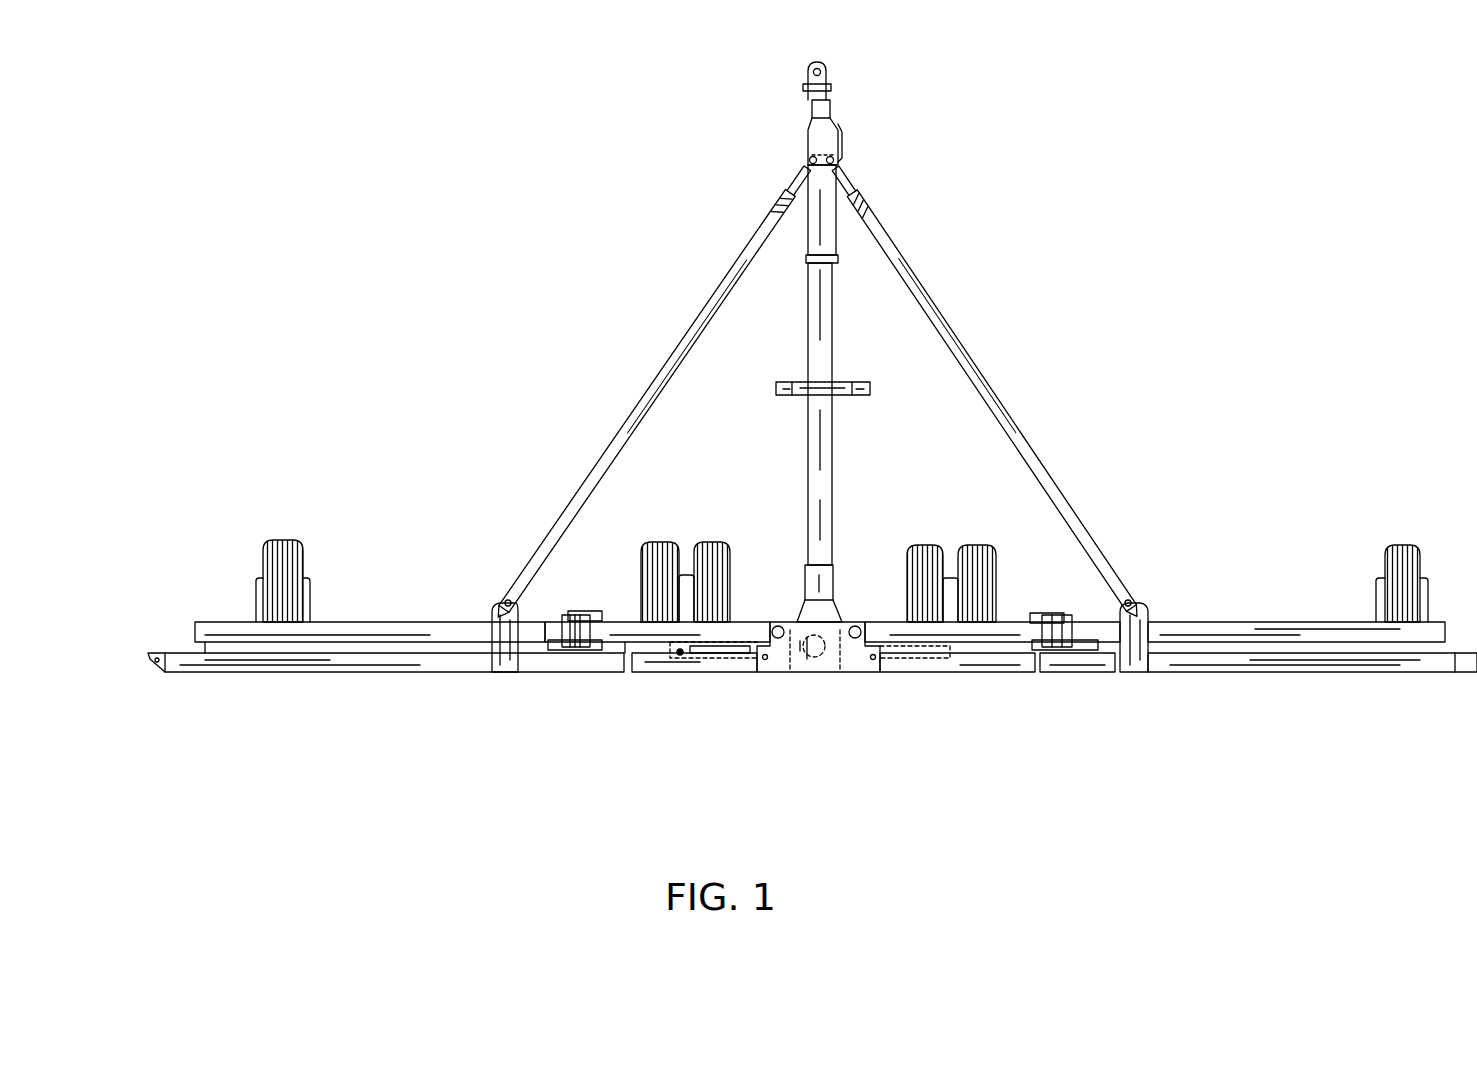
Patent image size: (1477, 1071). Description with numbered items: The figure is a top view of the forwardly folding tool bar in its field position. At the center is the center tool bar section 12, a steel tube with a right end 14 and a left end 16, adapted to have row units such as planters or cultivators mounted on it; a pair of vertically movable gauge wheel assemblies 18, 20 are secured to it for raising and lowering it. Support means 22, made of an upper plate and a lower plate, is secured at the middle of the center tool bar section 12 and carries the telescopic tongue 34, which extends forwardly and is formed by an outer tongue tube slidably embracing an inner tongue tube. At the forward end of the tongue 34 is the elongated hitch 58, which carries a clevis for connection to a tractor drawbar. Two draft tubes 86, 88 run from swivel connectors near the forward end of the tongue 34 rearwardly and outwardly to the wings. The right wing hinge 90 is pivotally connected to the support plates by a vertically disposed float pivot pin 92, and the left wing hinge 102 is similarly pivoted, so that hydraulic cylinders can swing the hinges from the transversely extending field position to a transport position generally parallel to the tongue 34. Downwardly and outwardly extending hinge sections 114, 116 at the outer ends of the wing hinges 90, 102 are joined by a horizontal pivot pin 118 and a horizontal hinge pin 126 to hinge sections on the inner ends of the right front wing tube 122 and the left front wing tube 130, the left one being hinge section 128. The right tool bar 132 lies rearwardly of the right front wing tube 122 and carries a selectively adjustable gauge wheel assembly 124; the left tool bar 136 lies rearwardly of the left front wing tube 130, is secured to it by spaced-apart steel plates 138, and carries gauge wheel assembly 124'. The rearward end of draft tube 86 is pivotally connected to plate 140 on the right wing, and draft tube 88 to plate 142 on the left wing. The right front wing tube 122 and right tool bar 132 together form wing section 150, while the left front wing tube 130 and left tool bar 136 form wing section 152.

The center tool bar section 12 is at (968, 680).
The right end 14 is at (1062, 650).
The left end 16 is at (640, 662).
The gauge wheel assembly 18 is at (920, 545).
The gauge wheel assembly 20 is at (715, 548).
The support means 22 is at (860, 675).
The telescopic tongue 34 is at (842, 340).
The hitch 58 is at (785, 106).
The draft tube 86 is at (965, 348).
The draft tube 88 is at (680, 340).
The right wing hinge 90 is at (1005, 603).
The float pivot pin 92 is at (852, 628).
The left wing hinge 102 is at (623, 603).
The hinge section 114 is at (1058, 620).
The hinge section 116 is at (583, 638).
The pivot pin 118 is at (1072, 650).
The right front wing tube 122 is at (1225, 625).
The gauge wheel assembly 124 is at (1426, 555).
The gauge wheel assembly 124' is at (252, 530).
The hinge pin 126 is at (590, 650).
The hinge section 128 is at (560, 650).
The left front wing tube 130 is at (450, 605).
The right tool bar 132 is at (1350, 665).
The left tool bar 136 is at (430, 672).
The steel plates 138 is at (350, 655).
The plate 140 is at (1148, 625).
The plate 142 is at (505, 672).
The wing section 150 is at (1300, 690).
The wing section 152 is at (300, 690).